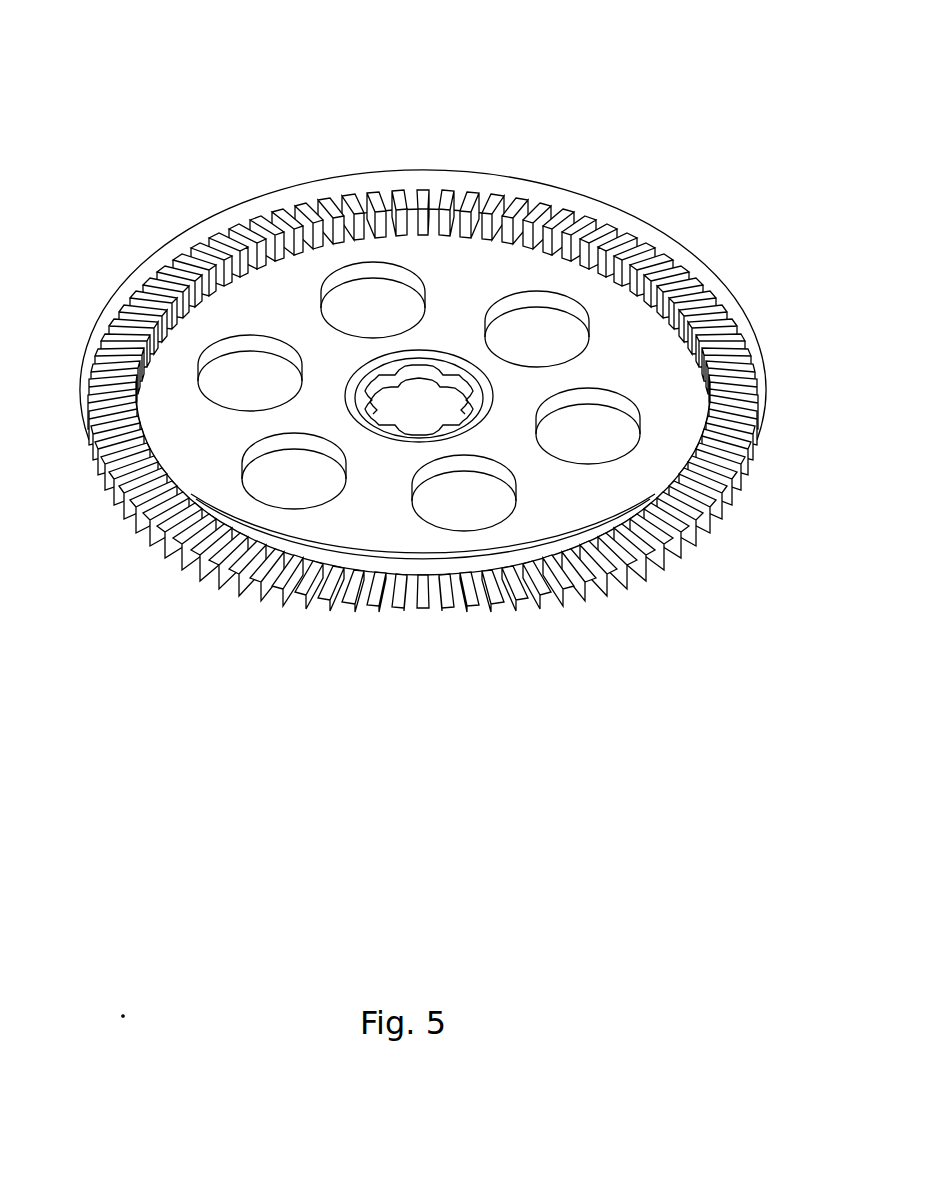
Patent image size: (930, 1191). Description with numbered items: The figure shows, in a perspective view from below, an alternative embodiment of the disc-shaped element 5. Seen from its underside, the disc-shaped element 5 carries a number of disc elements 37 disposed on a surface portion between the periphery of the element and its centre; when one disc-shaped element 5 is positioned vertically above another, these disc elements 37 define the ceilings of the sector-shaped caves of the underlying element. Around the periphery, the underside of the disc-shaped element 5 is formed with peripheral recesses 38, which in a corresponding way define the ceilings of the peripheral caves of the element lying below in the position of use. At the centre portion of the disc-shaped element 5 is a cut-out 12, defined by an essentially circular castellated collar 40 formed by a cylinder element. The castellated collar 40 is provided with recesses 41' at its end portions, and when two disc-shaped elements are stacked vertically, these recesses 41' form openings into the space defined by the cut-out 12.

The disc-shaped element 5 is at (443, 430).
The cut-out 12 is at (412, 388).
The disc elements 37 is at (585, 433).
The peripheral recesses 38 is at (445, 593).
The castellated collar 40 is at (435, 362).
The recesses 41' is at (376, 580).